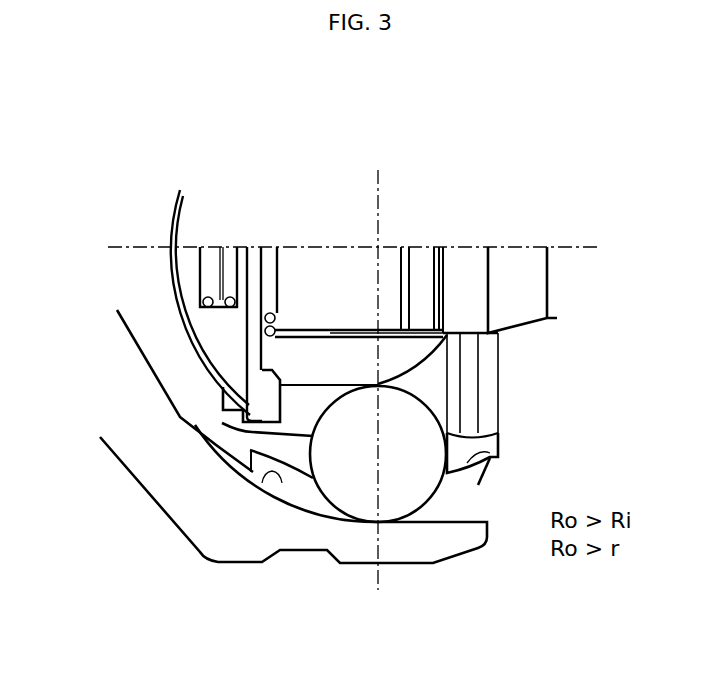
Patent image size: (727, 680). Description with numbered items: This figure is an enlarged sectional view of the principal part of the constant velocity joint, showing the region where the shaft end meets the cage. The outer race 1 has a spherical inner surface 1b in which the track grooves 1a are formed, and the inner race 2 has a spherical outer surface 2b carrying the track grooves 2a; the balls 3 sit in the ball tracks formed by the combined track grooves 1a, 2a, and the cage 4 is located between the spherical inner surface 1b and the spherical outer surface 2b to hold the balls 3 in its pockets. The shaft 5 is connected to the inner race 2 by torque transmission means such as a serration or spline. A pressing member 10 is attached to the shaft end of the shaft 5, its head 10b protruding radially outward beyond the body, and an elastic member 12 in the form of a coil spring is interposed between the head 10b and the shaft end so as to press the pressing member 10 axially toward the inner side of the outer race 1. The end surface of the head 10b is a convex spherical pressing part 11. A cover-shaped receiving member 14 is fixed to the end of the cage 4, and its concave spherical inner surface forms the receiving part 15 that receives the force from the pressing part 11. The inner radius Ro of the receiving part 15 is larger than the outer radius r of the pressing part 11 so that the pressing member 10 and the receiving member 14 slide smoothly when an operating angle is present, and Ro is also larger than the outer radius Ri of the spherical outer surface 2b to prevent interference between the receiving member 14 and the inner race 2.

The outer race 1 is at (238, 568).
The track grooves 1a is at (262, 483).
The spherical inner surface 1b is at (497, 455).
The inner race 2 is at (414, 348).
The track grooves 2a is at (447, 391).
The spherical outer surface 2b is at (292, 426).
The balls 3 is at (403, 485).
The cage 4 is at (301, 480).
The shaft 5 is at (513, 264).
The pressing member 10 is at (216, 246).
The head 10b is at (186, 311).
The pressing part 11 is at (176, 264).
The elastic member 12 is at (227, 308).
The receiving member 14 is at (181, 331).
The receiving part 15 is at (182, 284).
The inner radius of the receiving part Ro is at (378, 247).
The outer radius of the spherical outer surface Ri is at (223, 353).
The outer radius of the pressing part r is at (250, 247).